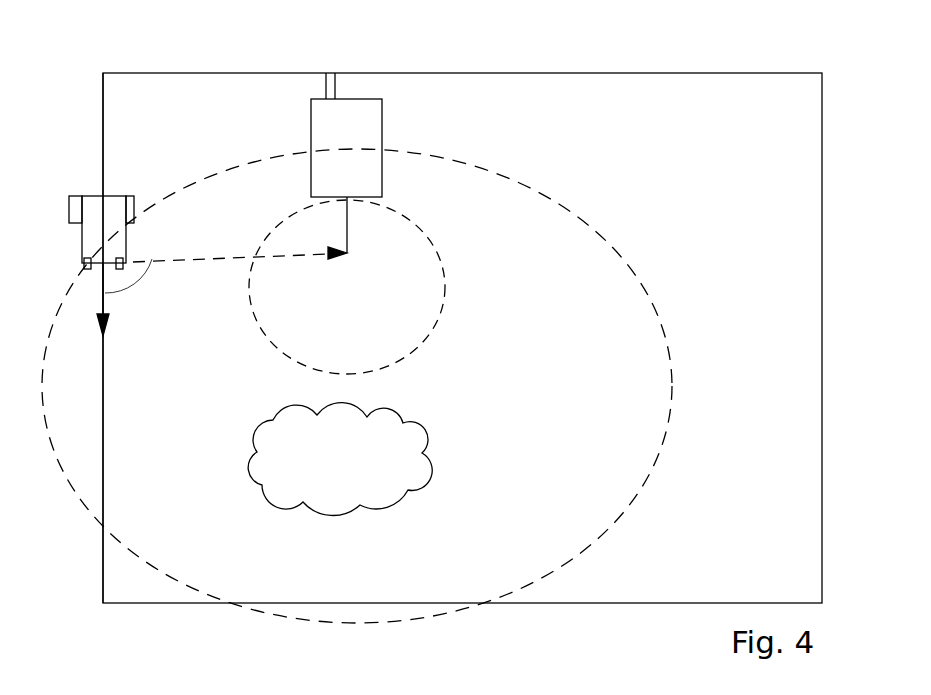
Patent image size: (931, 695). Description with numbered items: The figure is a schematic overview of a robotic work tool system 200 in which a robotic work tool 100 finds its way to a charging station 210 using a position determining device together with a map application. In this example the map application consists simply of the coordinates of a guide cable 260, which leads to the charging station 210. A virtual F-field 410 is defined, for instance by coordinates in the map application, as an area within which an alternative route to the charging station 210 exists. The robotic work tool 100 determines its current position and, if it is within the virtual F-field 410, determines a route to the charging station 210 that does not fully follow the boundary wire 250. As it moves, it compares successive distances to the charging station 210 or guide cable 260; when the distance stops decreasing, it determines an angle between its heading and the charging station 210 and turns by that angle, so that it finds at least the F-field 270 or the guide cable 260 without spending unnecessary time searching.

The robotic work tool 100 is at (128, 222).
The robotic work tool system 200 is at (781, 168).
The charging station 210 is at (322, 98).
The boundary wire 250 is at (102, 107).
The guide cable 260 is at (347, 250).
The F-field 270 is at (442, 263).
The virtual F-field 410 is at (528, 183).